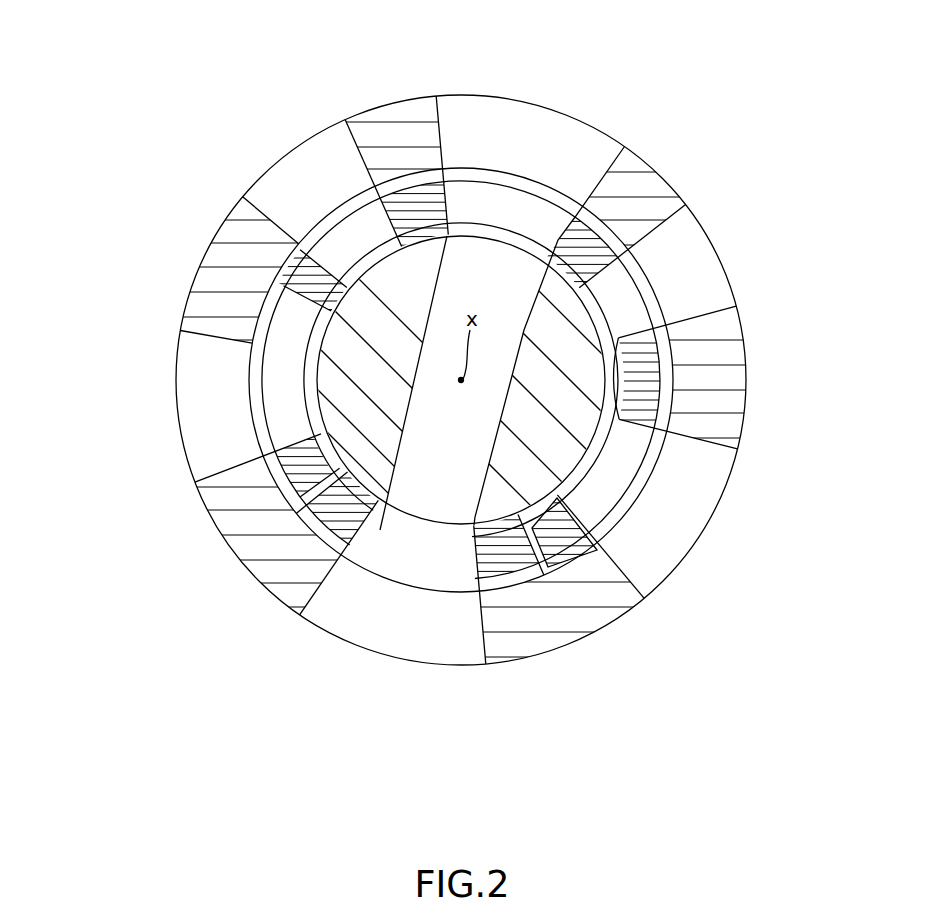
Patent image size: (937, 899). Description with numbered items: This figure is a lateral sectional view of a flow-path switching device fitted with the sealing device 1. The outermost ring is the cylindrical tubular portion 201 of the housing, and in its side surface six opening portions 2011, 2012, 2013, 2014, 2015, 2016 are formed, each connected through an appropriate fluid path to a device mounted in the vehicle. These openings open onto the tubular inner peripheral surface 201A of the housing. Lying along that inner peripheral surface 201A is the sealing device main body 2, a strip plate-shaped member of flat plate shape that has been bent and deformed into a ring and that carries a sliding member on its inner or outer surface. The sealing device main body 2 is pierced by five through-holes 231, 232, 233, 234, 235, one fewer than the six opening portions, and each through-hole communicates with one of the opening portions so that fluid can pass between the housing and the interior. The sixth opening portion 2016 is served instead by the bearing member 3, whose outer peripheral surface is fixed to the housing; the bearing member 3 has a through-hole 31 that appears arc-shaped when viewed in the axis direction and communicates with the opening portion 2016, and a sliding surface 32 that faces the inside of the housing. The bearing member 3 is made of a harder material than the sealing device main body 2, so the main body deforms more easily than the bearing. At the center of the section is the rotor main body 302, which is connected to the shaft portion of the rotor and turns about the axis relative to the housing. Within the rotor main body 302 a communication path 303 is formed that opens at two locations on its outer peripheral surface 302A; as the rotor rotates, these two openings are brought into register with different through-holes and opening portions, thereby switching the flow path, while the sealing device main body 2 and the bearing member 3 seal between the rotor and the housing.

The sealing device 1 is at (668, 402).
The sealing device main body 2 is at (682, 348).
The tubular portion 201 is at (665, 180).
The inner peripheral surface 201A is at (288, 298).
The opening portion 2011 is at (617, 563).
The opening portion 2012 is at (698, 317).
The opening portion 2013 is at (598, 187).
The opening portion 2014 is at (280, 227).
The opening portion 2015 is at (313, 350).
The opening portion 2016 is at (345, 580).
The through-hole 231 is at (617, 497).
The through-hole 232 is at (642, 333).
The through-hole 233 is at (455, 210).
The through-hole 234 is at (337, 262).
The through-hole 235 is at (282, 453).
The bearing member 3 is at (507, 568).
The through-hole 31 is at (478, 553).
The sliding surface 32 is at (368, 488).
The rotor main body 302 is at (388, 282).
The outer peripheral surface 302A is at (317, 383).
The communication path 303 is at (527, 307).